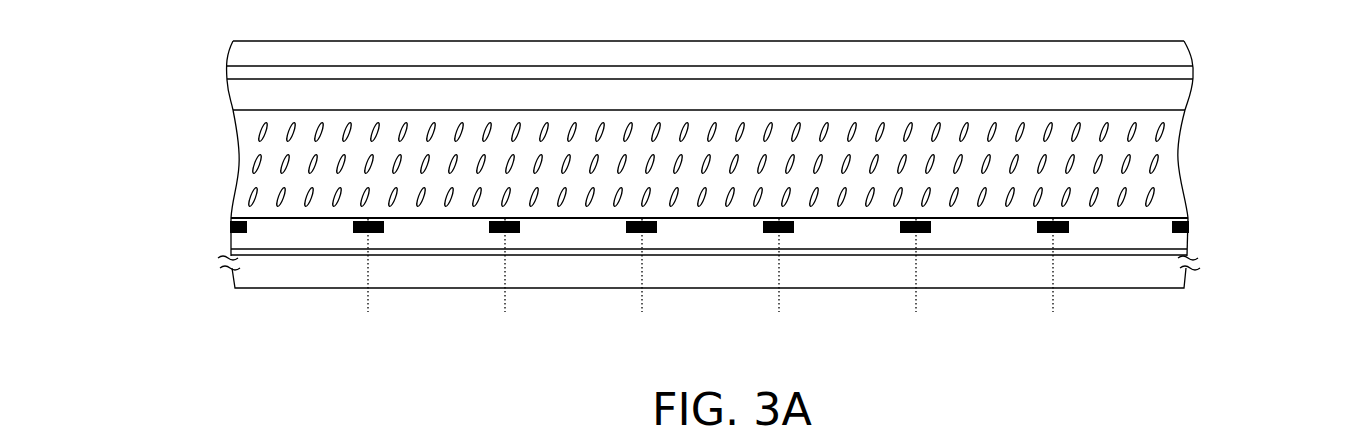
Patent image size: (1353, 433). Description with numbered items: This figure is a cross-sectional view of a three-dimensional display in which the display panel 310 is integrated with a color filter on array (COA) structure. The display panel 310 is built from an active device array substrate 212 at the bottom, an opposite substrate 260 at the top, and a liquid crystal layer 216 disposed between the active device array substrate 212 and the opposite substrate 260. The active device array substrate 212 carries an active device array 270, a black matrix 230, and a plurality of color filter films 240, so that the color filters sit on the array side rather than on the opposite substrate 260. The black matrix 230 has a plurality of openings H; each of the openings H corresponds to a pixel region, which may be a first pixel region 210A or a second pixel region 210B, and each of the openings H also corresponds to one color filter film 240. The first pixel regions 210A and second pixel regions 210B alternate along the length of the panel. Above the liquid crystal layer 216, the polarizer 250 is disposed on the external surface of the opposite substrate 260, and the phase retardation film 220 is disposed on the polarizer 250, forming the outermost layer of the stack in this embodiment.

The display panel 310 is at (143, 102).
The phase retardation film 220 is at (1181, 50).
The polarizer 250 is at (1181, 73).
The opposite substrate 260 is at (246, 98).
The liquid crystal layer 216 is at (210, 113).
The active device array substrate 212 is at (210, 221).
The black matrix 230 is at (1189, 228).
The color filter film 240 is at (1178, 243).
The active device array 270 is at (1190, 262).
The first pixel region 210A is at (707, 274).
The second pixel region 210B is at (729, 274).
The opening H is at (955, 222).